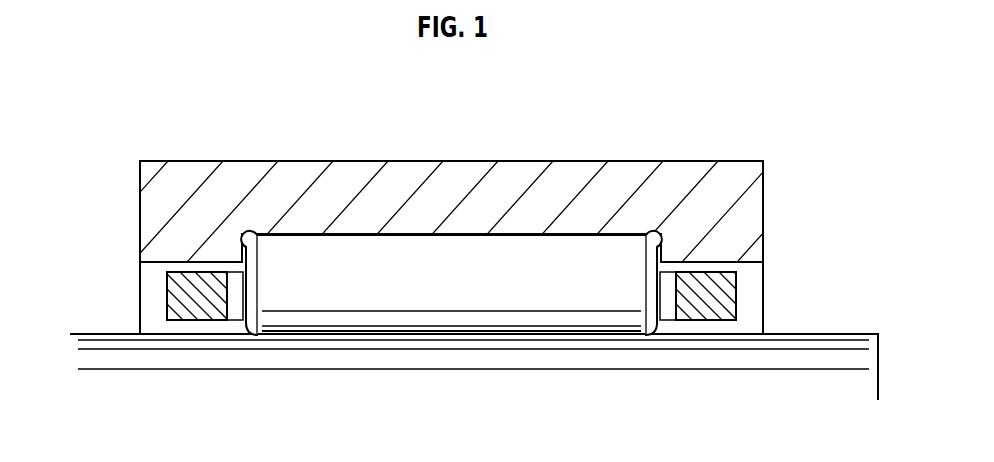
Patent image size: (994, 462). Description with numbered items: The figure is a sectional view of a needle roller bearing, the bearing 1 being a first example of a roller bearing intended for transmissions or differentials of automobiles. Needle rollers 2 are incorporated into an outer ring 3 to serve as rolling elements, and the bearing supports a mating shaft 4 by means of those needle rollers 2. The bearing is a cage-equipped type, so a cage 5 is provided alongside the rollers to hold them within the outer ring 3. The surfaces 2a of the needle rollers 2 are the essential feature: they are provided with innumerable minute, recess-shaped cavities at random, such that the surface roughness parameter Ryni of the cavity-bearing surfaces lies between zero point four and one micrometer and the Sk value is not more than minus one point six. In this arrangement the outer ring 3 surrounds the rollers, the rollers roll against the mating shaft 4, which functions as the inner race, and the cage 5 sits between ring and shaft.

The test bearing 1 is at (628, 155).
The needle roller 2 is at (513, 257).
The surface of rolling element 2a is at (412, 228).
The outer ring 3 is at (300, 177).
The mating shaft 4 is at (817, 343).
The cage 5 is at (180, 293).